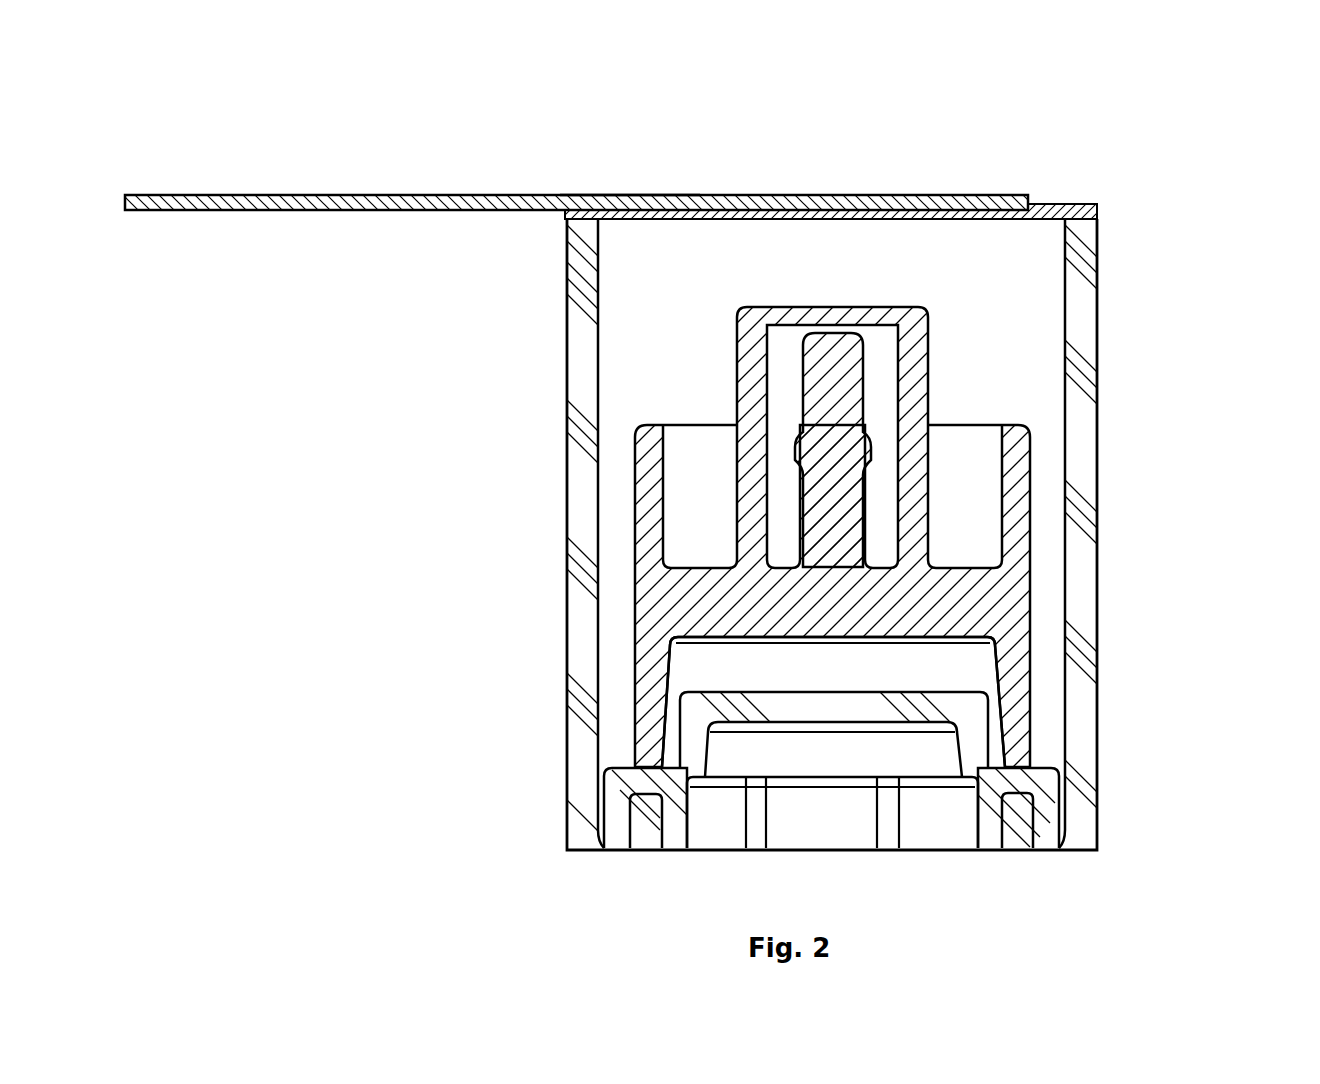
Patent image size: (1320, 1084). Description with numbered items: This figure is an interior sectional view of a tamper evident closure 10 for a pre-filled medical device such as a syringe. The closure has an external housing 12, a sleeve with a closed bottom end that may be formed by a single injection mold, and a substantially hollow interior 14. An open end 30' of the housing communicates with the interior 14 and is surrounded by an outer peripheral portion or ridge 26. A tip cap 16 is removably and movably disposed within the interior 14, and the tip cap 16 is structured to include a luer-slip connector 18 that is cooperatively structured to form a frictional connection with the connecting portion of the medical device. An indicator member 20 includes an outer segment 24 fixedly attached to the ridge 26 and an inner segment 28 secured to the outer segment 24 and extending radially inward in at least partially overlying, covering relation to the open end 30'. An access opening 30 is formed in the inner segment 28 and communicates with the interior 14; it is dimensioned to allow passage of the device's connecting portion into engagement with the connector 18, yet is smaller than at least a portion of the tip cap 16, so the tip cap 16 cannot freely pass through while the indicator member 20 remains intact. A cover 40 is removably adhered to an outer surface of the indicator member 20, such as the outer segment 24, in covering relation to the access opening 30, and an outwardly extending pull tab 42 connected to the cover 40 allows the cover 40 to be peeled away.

The tamper evident closure 10 is at (418, 553).
The external housing 12 is at (1097, 670).
The hollow interior 14 is at (1027, 377).
The tip cap 16 is at (1030, 523).
The luer-slip connector 18 is at (970, 370).
The indicator member 20 is at (1067, 157).
The outer segment 24 is at (1100, 205).
The outer peripheral portion or ridge 26 is at (567, 225).
The inner segment 28 is at (673, 220).
The access opening 30 is at (910, 253).
The open end 30' is at (522, 316).
The cover 40 is at (623, 128).
The pull tab 42 is at (305, 195).